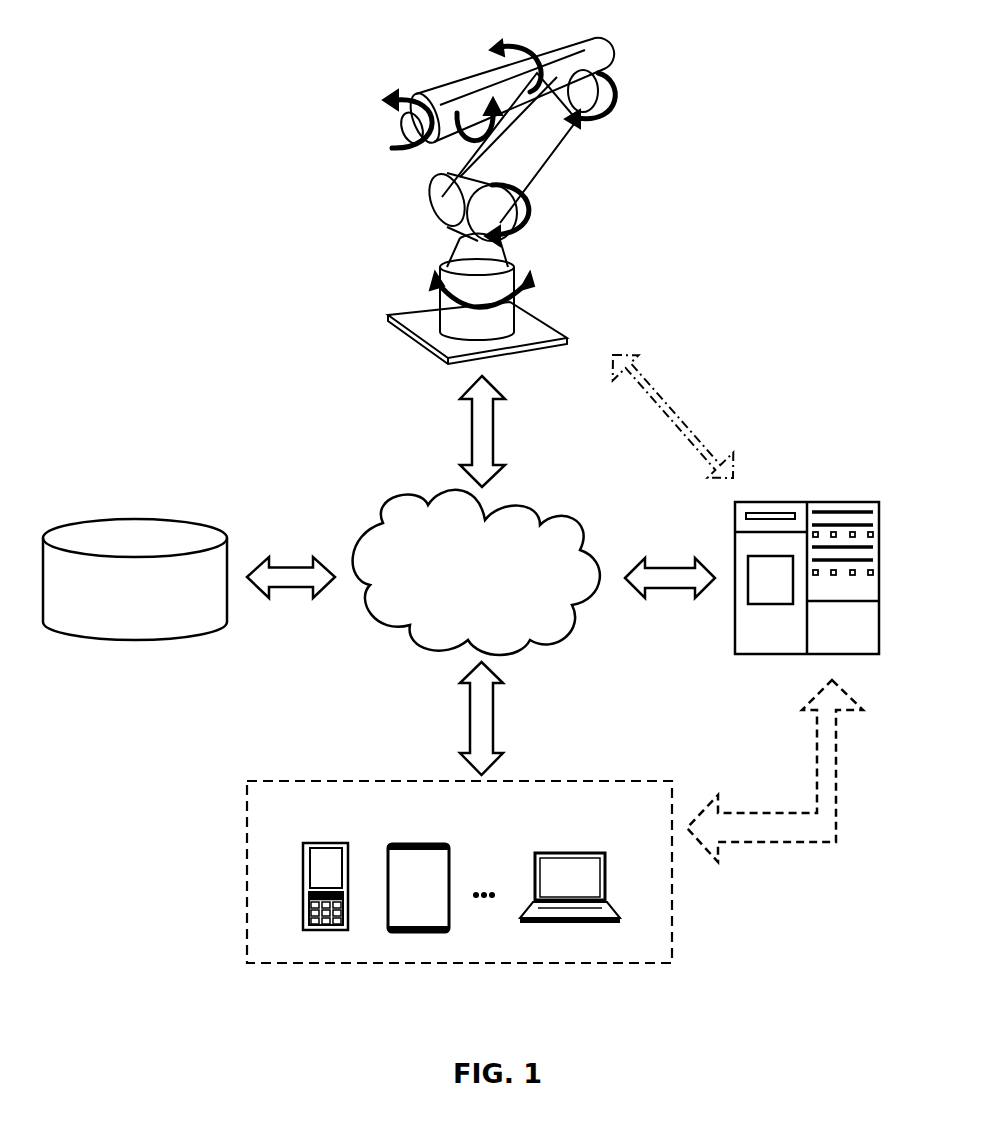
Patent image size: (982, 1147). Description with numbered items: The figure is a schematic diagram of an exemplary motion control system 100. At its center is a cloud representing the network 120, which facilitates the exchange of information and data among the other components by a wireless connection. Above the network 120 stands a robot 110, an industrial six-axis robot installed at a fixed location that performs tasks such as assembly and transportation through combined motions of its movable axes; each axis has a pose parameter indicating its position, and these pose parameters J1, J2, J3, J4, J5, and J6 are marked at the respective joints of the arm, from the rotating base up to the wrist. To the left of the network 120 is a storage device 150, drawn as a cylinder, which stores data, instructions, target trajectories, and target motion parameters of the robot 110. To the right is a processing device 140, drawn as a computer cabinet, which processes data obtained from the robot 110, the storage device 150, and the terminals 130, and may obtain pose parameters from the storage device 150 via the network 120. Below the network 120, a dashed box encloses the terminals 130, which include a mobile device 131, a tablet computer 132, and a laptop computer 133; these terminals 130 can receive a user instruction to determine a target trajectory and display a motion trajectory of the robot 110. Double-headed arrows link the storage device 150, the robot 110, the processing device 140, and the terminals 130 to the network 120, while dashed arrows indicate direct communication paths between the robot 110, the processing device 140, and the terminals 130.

The motion control system 100 is at (160, 73).
The robot 110 is at (388, 185).
The network 120 is at (502, 507).
The terminals 130 is at (514, 781).
The mobile device 131 is at (316, 843).
The tablet computer 132 is at (410, 843).
The laptop computer 133 is at (560, 845).
The processing device 140 is at (753, 500).
The storage device 150 is at (100, 518).
The pose parameter J1 is at (482, 300).
The pose parameter J2 is at (521, 215).
The pose parameter J3 is at (599, 102).
The pose parameter J4 is at (515, 56).
The pose parameter J5 is at (479, 126).
The pose parameter J6 is at (407, 132).